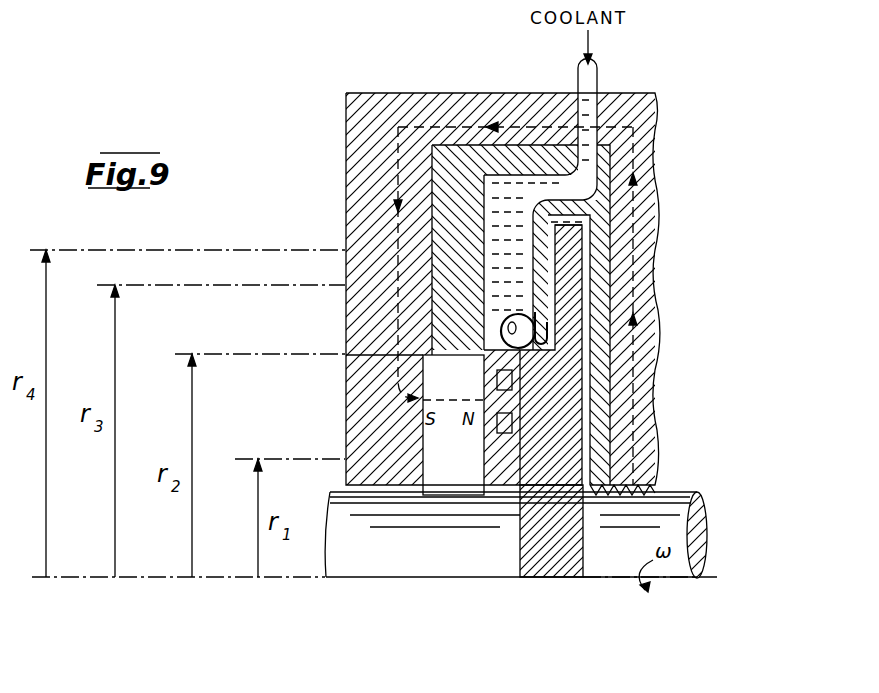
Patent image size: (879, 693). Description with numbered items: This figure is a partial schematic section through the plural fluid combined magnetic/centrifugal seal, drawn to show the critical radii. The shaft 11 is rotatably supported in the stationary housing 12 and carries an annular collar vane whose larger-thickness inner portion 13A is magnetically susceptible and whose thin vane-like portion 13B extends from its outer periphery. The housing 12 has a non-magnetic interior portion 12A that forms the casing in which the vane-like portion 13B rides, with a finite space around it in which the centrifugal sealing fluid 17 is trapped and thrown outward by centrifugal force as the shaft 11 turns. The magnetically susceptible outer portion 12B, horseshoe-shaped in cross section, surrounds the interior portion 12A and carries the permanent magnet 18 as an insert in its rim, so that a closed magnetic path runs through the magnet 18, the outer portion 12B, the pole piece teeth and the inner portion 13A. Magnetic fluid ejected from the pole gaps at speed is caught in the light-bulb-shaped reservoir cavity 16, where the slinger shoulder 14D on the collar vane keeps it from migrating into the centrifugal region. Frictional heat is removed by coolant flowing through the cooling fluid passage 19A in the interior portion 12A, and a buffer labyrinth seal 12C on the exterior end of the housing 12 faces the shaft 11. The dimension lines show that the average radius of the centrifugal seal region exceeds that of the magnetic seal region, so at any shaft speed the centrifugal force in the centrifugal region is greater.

The shaft 11 is at (390, 568).
The housing 12 is at (338, 170).
The interior portion of housing member 12A is at (460, 168).
The magnetically susceptible portion of housing member 12B is at (360, 232).
The buffer labyrinth seal 12C is at (637, 488).
The inner portion of collar vane 13A is at (538, 566).
The vane-like portion of collar vane 13B is at (570, 352).
The slinger shoulder 14D is at (510, 332).
The reservoir cavity 16 is at (520, 297).
The centrifugal sealing fluid 17 is at (600, 222).
The permanent magnet 18 is at (462, 387).
The cooling fluid passage 19A is at (484, 197).